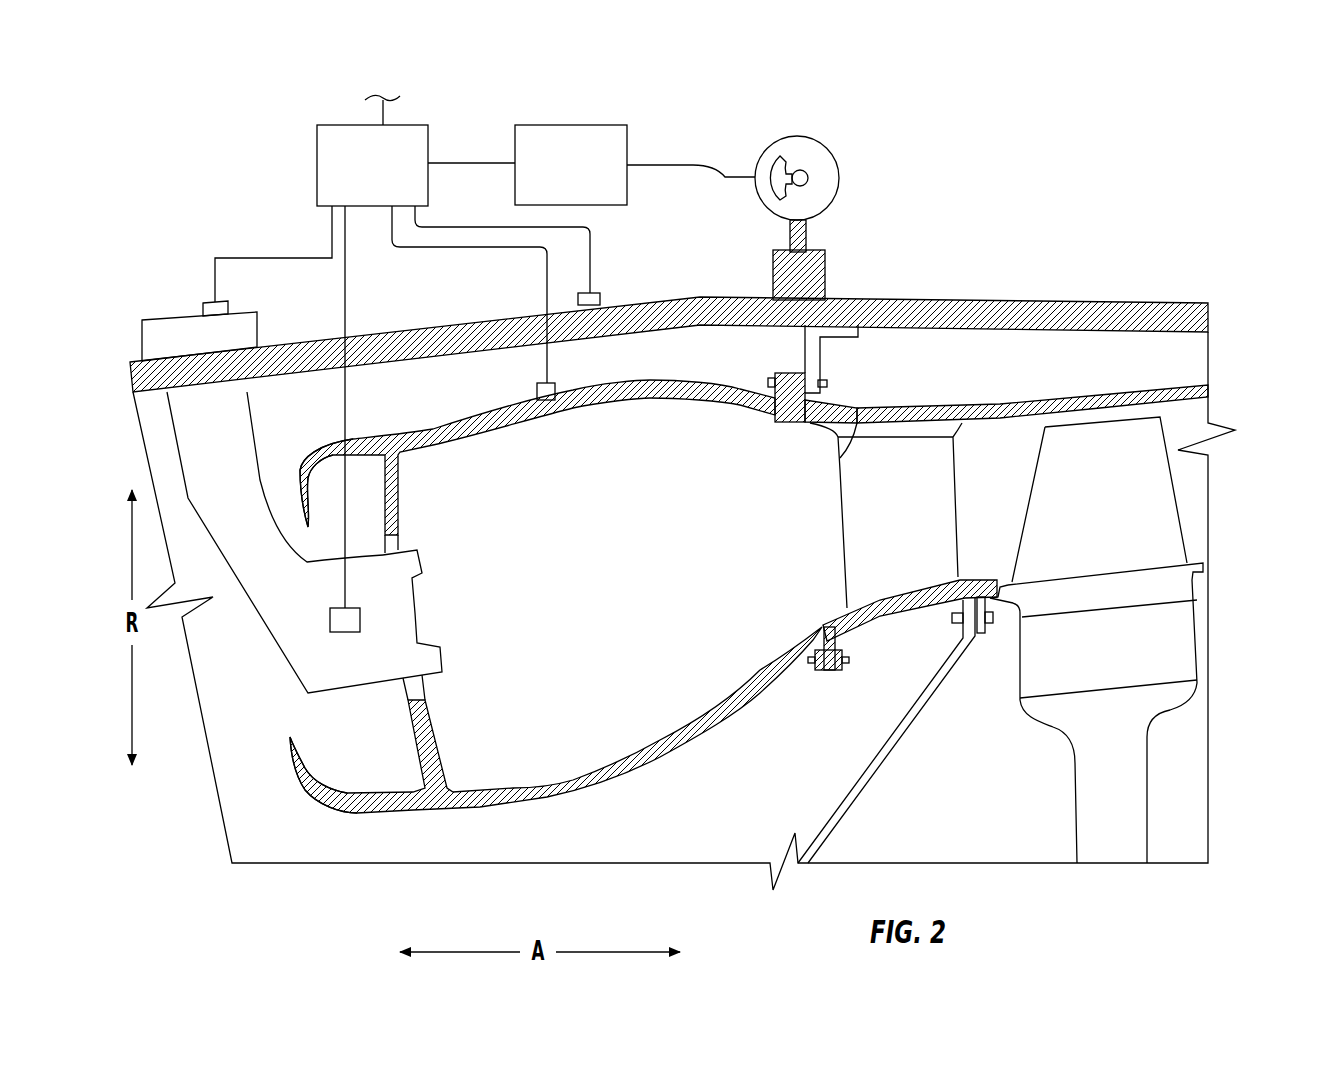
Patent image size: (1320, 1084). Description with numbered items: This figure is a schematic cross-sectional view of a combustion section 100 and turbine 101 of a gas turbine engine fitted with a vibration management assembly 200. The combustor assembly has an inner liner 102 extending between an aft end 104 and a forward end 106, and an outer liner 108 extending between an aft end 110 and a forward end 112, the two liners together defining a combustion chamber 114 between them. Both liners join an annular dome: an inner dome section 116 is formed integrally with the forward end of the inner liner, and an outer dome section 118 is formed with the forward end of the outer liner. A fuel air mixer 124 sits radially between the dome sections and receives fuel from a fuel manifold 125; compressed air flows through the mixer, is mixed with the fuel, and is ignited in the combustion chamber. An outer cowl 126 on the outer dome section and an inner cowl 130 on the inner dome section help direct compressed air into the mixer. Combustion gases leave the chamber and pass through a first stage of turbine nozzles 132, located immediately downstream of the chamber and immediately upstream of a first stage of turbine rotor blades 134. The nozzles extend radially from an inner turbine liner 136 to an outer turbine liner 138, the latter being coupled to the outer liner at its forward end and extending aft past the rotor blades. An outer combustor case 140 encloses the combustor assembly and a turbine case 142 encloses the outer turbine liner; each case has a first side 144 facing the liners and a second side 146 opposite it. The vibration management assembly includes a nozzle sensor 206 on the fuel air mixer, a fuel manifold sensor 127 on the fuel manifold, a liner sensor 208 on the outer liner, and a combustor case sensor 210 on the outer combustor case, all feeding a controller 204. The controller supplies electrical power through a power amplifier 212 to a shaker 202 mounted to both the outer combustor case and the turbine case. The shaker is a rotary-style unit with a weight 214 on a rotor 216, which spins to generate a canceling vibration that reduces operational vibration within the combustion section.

The combustion section 100 is at (258, 240).
The turbine 101 is at (1110, 357).
The inner liner 102 is at (637, 765).
The aft end 104 is at (820, 677).
The forward end 106 is at (445, 822).
The outer liner 108 is at (648, 380).
The aft end 110 is at (762, 415).
The forward end 112 is at (424, 420).
The combustion chamber 114 is at (594, 573).
The inner dome section 116 is at (287, 788).
The outer dome section 118 is at (283, 448).
The fuel air mixer 124 is at (298, 650).
The fuel manifold 125 is at (167, 330).
The outer cowl 126 is at (300, 477).
The fuel manifold sensor 127 is at (203, 303).
The inner cowl 130 is at (312, 800).
The first stage of turbine nozzles 132 is at (865, 540).
The first stage of turbine rotor blades 134 is at (1133, 445).
The inner turbine liner 136 is at (888, 623).
The outer turbine liner 138 is at (840, 458).
The outer combustor case 140 is at (425, 335).
The turbine case 142 is at (1013, 307).
The first side 144 is at (331, 333).
The second side 146 is at (447, 365).
The vibration management assembly 200 is at (660, 78).
The shaker 202 is at (853, 212).
The controller 204 is at (416, 150).
The nozzle sensor 206 is at (360, 622).
The liner sensor 208 is at (555, 383).
The combustor case sensor 210 is at (592, 292).
The power amplifier 212 is at (635, 165).
The weight 214 is at (772, 158).
The rotor 216 is at (815, 177).